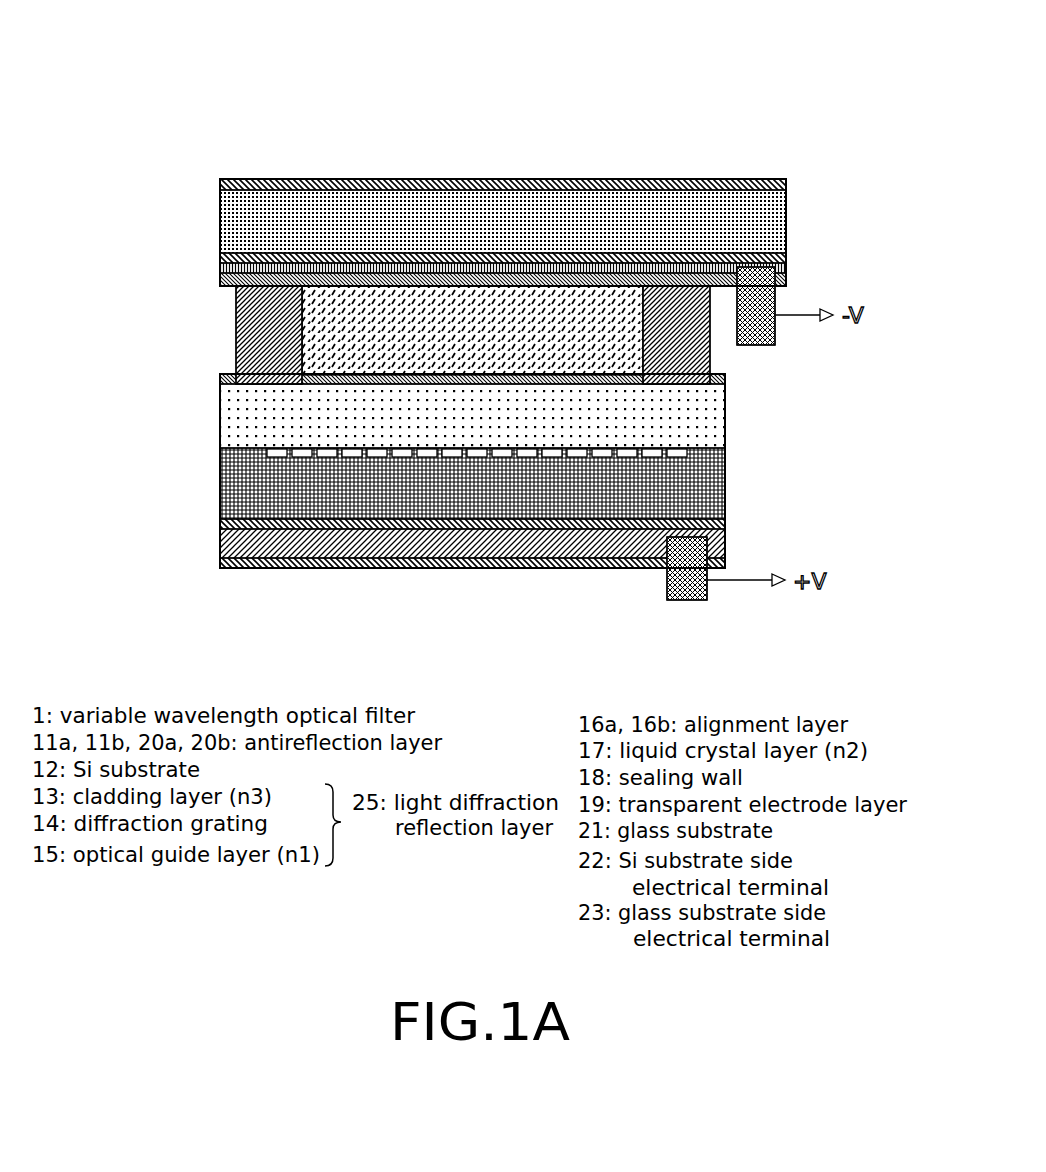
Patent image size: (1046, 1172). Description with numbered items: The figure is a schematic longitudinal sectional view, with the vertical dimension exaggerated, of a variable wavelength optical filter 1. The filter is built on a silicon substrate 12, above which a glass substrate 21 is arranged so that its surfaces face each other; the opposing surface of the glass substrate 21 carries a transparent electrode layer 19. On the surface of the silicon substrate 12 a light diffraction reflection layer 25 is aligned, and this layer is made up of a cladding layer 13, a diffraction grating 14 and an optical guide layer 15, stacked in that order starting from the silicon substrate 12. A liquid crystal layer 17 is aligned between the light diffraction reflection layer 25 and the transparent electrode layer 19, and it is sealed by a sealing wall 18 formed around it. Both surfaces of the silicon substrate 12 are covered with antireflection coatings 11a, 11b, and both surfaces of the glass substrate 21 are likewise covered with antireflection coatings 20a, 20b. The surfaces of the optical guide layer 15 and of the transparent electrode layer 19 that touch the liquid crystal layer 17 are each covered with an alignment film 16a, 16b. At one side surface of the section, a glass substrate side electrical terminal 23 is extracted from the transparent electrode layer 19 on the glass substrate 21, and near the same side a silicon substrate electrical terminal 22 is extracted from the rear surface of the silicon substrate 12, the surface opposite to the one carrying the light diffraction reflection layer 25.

The variable wavelength optical filter 1 is at (370, 98).
The antireflection coating 11a is at (255, 563).
The antireflection coating 11b is at (255, 524).
The silicon substrate 12 is at (260, 541).
The cladding layer 13 is at (274, 486).
The diffraction grating 14 is at (270, 458).
The optical guide layer 15 is at (254, 423).
The alignment film 16a is at (280, 386).
The alignment film 16b is at (325, 283).
The liquid crystal layer 17 is at (350, 330).
The sealing wall 18 is at (690, 352).
The transparent electrode layer 19 is at (238, 268).
The antireflection coating 20a is at (283, 257).
The antireflection coating 20b is at (257, 185).
The glass substrate 21 is at (253, 222).
The silicon substrate electrical terminal 22 is at (707, 595).
The glass substrate side electrical terminal 23 is at (758, 330).
The light diffraction reflection layer 25 is at (401, 452).